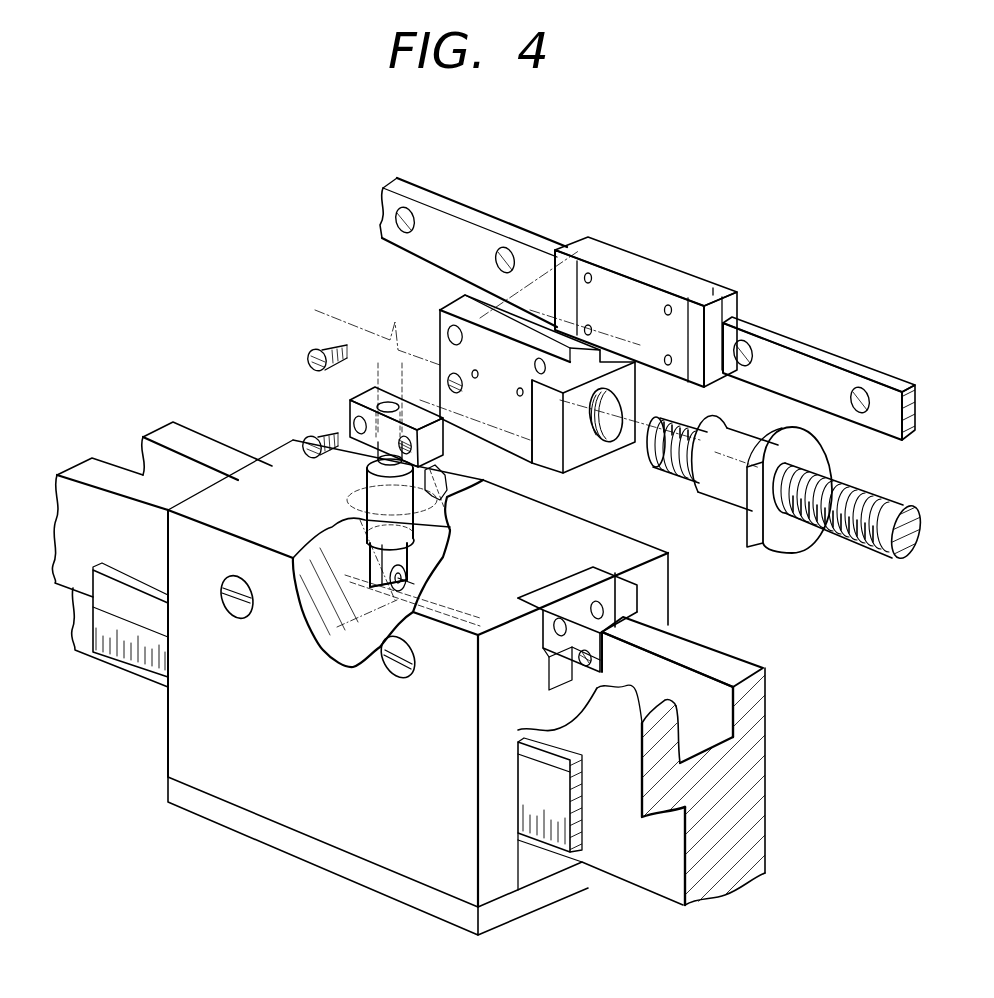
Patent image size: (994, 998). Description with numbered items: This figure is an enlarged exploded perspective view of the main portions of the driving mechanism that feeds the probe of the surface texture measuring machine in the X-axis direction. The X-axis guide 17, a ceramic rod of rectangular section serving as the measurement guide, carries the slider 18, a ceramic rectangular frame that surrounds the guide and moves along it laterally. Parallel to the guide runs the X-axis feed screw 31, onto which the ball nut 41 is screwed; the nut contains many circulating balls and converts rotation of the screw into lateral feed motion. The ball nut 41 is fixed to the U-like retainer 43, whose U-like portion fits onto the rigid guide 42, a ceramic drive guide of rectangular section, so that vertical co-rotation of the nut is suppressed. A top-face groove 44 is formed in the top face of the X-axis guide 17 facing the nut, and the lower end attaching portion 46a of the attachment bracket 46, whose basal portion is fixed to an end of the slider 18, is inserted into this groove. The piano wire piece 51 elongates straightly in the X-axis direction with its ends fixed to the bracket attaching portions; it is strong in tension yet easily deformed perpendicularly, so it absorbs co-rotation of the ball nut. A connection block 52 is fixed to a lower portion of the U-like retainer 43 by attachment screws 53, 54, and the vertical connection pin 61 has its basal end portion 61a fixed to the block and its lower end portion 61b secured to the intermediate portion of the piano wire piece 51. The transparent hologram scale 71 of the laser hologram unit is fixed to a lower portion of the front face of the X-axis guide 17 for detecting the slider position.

The X-axis guide 17 is at (752, 816).
The slider 18 is at (345, 835).
The X-axis feed screw 31 is at (855, 543).
The ball nut 41 is at (720, 491).
The rigid guide 42 is at (790, 360).
The U-like retainer 43 is at (652, 276).
The top-face groove 44 is at (720, 704).
The attachment bracket 46 is at (555, 580).
The lower end attaching portion 46a is at (587, 636).
The piano wire piece 51 is at (395, 660).
The connection block 52 is at (345, 404).
The attachment screw 53 is at (305, 439).
The attachment screw 54 is at (362, 462).
The vertical connection pin 61 is at (405, 525).
The basal end portion 61a is at (440, 465).
The lower end portion 61b is at (405, 563).
The transparent hologram scale 71 is at (555, 855).